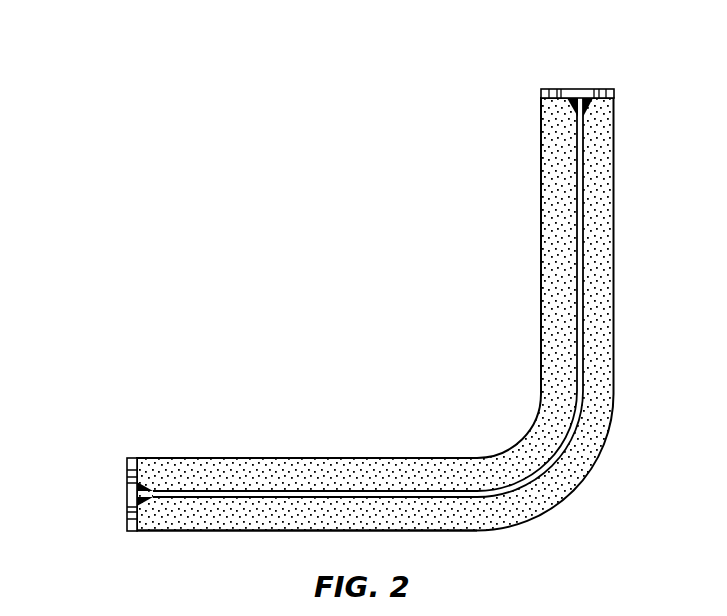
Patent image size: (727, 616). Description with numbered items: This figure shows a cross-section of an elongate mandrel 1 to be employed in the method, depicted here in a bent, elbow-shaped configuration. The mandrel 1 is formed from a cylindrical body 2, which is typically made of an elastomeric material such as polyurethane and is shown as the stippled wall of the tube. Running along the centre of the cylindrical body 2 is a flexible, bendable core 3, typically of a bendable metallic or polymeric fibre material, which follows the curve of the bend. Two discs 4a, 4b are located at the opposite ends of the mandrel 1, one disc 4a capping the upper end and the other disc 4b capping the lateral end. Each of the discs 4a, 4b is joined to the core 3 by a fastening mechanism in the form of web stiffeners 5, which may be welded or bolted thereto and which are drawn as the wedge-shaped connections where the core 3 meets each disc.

The mandrel 1 is at (527, 433).
The cylindrical body 2 is at (433, 472).
The core 3 is at (586, 195).
The disc 4a is at (578, 88).
The disc 4b is at (128, 492).
The web stiffeners 5 is at (588, 108).